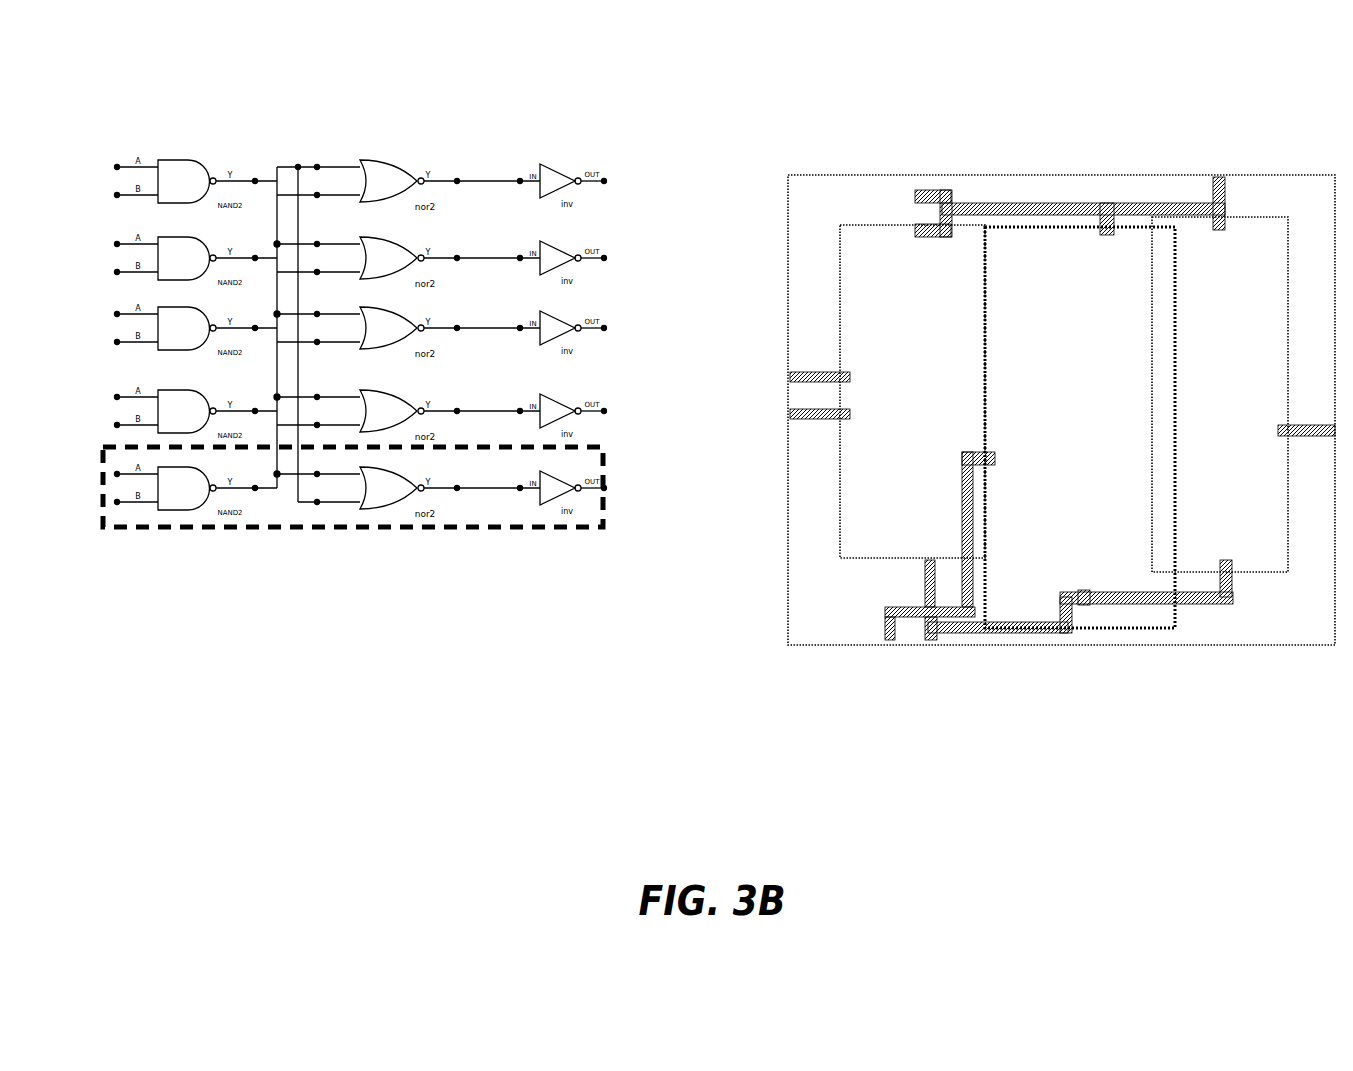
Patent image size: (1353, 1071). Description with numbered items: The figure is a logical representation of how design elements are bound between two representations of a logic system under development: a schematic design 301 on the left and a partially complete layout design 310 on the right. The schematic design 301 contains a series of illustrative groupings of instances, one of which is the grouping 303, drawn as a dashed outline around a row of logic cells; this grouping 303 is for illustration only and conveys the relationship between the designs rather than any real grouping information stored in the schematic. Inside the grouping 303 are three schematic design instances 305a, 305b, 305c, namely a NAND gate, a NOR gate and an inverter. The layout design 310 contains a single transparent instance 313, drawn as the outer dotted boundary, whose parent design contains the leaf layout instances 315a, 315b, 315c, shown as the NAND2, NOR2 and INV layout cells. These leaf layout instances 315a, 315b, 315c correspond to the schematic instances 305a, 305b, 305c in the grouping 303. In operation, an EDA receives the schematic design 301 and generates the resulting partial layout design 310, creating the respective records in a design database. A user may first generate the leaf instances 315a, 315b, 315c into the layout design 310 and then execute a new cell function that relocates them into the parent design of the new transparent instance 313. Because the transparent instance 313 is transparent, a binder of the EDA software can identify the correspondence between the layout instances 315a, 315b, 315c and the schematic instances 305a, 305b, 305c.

The schematic design 301 is at (391, 445).
The grouping of instances 303 is at (318, 532).
The schematic design instance 305a is at (198, 516).
The schematic design instance 305b is at (408, 513).
The schematic design instance 305c is at (604, 521).
The layout design 310 is at (995, 390).
The transparent instance 313 is at (795, 170).
The leaf layout instance 315a is at (858, 535).
The leaf layout instance 315b is at (1069, 250).
The leaf layout instance 315c is at (1224, 316).